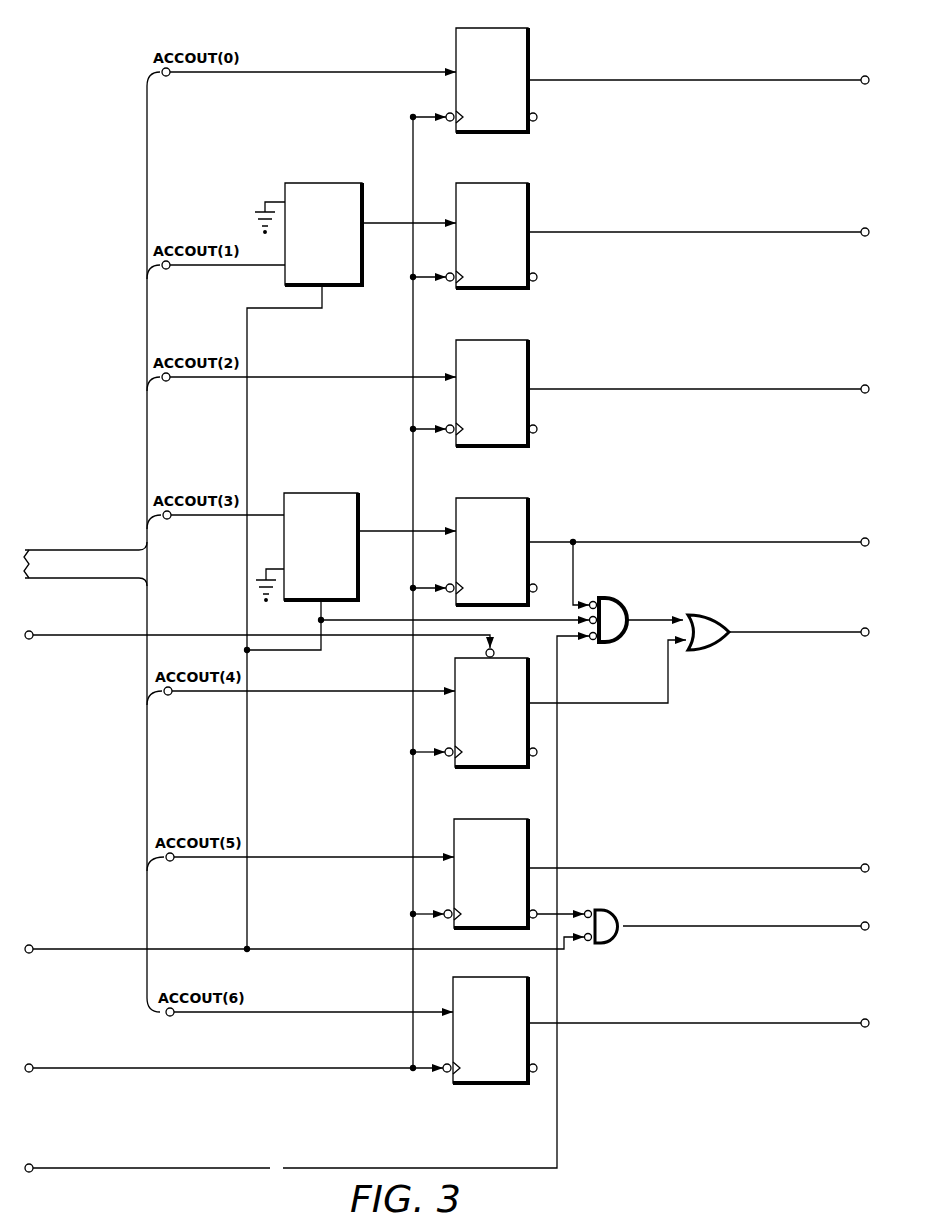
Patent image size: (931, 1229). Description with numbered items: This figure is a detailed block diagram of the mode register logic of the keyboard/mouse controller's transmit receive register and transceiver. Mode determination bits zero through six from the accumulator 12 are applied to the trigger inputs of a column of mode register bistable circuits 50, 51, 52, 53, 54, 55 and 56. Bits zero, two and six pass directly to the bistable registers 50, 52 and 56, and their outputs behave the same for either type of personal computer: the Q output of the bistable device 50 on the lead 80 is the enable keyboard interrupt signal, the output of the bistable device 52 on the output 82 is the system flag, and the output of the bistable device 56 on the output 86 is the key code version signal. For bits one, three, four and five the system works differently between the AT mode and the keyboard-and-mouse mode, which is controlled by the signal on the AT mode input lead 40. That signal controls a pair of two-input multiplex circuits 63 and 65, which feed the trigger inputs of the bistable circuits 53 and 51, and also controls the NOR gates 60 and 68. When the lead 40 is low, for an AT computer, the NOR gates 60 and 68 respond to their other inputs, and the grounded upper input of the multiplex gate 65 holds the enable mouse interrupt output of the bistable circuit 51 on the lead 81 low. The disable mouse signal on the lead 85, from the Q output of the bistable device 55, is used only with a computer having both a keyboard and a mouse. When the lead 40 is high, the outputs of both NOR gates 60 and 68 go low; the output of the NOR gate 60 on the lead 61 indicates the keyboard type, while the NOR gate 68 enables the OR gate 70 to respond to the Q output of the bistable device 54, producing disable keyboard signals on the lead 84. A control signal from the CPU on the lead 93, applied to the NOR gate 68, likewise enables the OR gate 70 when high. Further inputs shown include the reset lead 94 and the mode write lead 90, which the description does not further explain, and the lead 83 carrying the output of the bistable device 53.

The accumulator 12 is at (92, 542).
The mode register bistable circuit 50 is at (500, 28).
The mode register bistable circuit 51 is at (500, 183).
The mode register bistable circuit 52 is at (500, 340).
The mode register bistable circuit 53 is at (500, 498).
The mode register bistable circuit 54 is at (500, 658).
The mode register bistable circuit 55 is at (500, 819).
The mode register bistable circuit 56 is at (500, 977).
The two-input multiplex circuit 63 is at (328, 493).
The two-input multiplex circuit 65 is at (330, 183).
The NOR gate 68 is at (624, 584).
The OR gate 70 is at (714, 604).
The NOR gate 60 is at (622, 896).
The lead 80 is at (716, 81).
The lead 81 is at (716, 233).
The output 82 is at (716, 390).
The INH output 83 is at (716, 543).
The lead 84 is at (800, 633).
The lead 85 is at (716, 869).
The lead 61 is at (716, 927).
The output 86 is at (716, 1024).
The RESET input 94 is at (78, 636).
The AT mode input lead 40 is at (72, 950).
The MODEWR- input 90 is at (72, 1069).
The lead 93 is at (76, 1169).